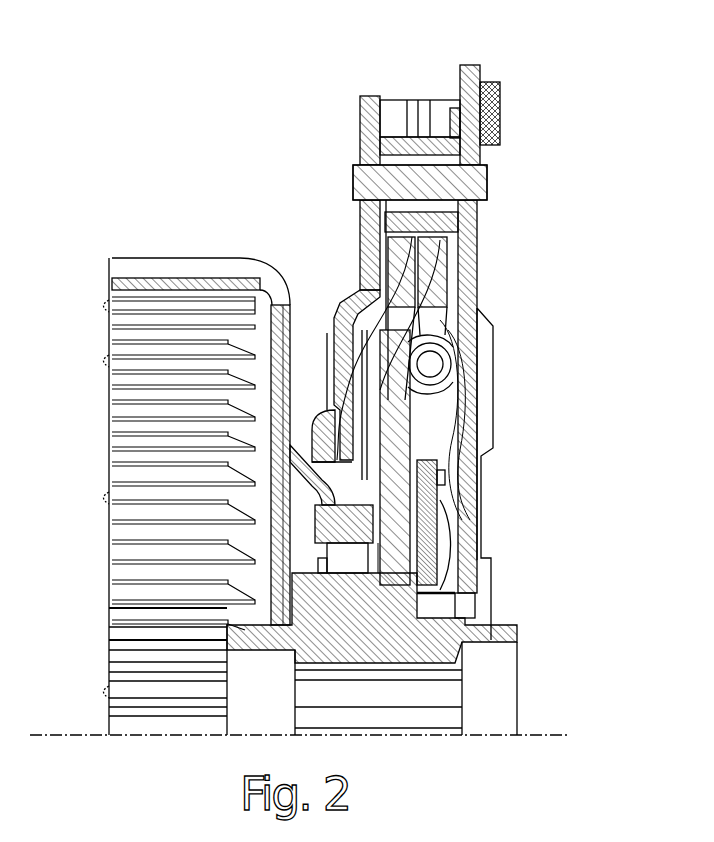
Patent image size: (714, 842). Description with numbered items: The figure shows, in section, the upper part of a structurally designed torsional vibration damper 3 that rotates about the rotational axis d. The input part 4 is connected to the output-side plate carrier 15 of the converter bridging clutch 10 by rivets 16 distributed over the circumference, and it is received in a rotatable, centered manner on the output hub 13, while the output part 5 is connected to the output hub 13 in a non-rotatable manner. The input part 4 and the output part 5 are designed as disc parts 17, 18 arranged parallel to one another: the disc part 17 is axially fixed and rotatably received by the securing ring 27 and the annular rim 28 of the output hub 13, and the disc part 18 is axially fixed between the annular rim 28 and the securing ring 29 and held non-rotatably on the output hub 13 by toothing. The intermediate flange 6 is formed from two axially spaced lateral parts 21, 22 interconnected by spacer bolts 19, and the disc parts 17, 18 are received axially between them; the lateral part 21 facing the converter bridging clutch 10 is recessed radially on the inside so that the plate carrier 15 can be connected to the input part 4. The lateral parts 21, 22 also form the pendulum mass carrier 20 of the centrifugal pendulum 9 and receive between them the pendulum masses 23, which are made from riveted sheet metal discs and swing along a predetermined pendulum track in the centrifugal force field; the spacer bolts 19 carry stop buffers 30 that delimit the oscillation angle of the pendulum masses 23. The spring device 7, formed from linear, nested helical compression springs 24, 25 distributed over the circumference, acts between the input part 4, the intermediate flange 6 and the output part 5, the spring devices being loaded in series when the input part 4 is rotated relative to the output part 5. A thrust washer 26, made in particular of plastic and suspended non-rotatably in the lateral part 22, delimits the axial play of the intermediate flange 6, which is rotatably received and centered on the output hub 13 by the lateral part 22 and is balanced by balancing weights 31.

The torsional vibration damper 3 is at (124, 91).
The input part 4 is at (343, 423).
The output part 5 is at (460, 437).
The intermediate flange 6 is at (431, 319).
The spring device 7 is at (499, 476).
The centrifugal pendulum 9 is at (366, 92).
The converter bridging clutch 10 is at (104, 242).
The output hub 13 is at (495, 687).
The output-side plate carrier 15 is at (112, 290).
The rivets 16 is at (315, 516).
The disc part 17 is at (346, 338).
The disc part 18 is at (478, 378).
The spacer bolts 19 is at (456, 185).
The pendulum mass carrier 20 is at (356, 150).
The lateral part 21 is at (372, 240).
The lateral part 22 is at (470, 273).
The pendulum masses 23 is at (418, 112).
The helical compression spring 24 is at (478, 383).
The helical compression spring 25 is at (480, 342).
The thrust washer 26 is at (480, 531).
The securing ring 27 is at (327, 562).
The annular rim 28 is at (490, 614).
The securing ring 29 is at (493, 566).
The stop buffers 30 is at (482, 148).
The balancing weights 31 is at (498, 113).
The rotational axis d is at (58, 733).